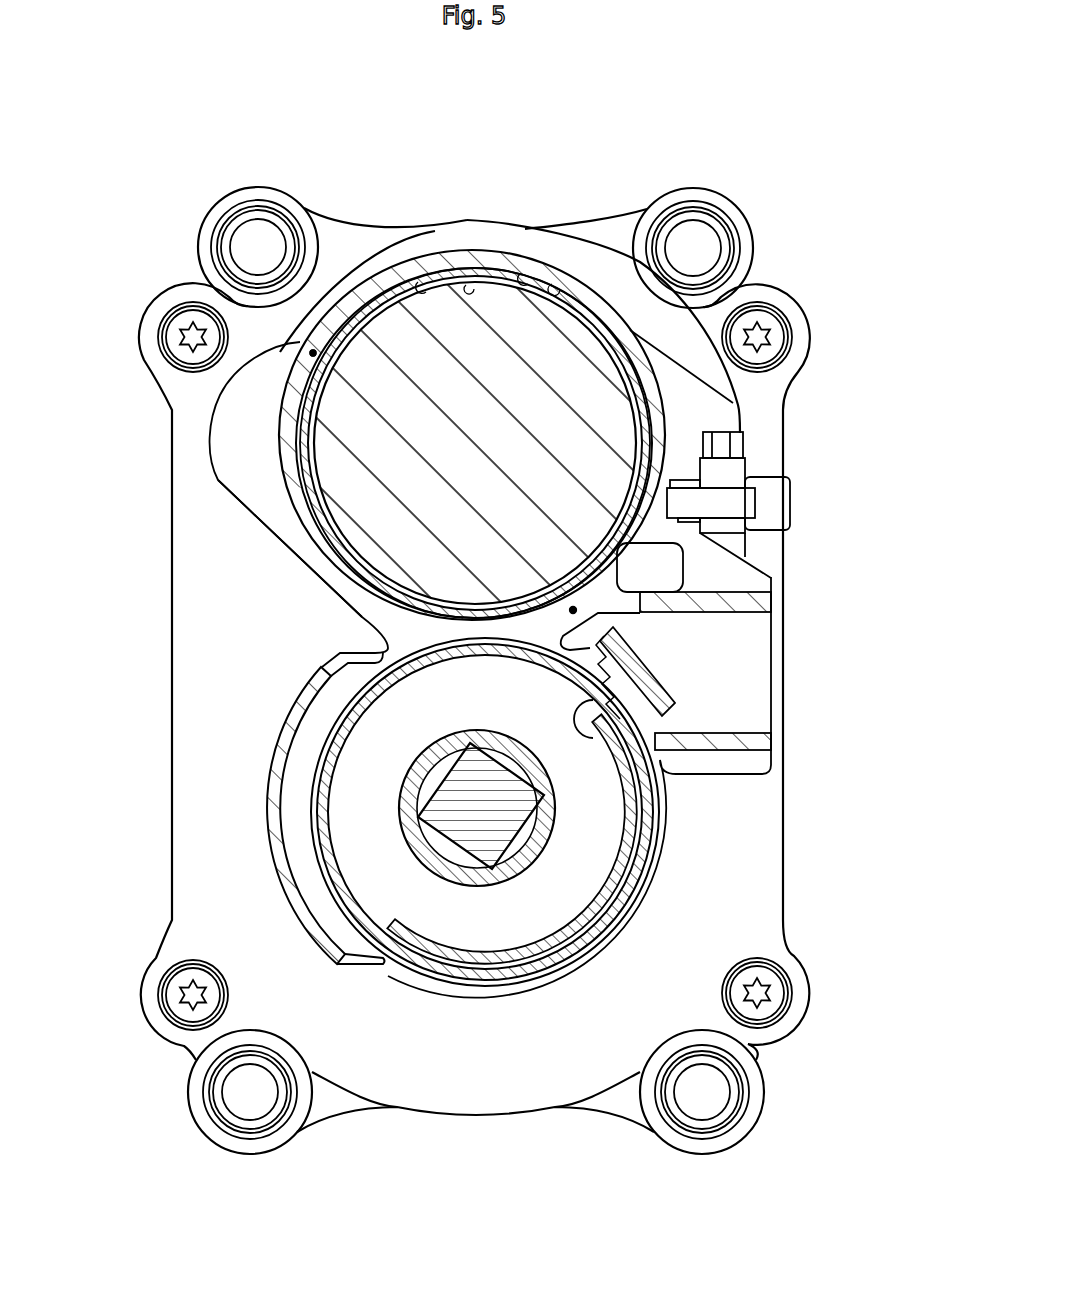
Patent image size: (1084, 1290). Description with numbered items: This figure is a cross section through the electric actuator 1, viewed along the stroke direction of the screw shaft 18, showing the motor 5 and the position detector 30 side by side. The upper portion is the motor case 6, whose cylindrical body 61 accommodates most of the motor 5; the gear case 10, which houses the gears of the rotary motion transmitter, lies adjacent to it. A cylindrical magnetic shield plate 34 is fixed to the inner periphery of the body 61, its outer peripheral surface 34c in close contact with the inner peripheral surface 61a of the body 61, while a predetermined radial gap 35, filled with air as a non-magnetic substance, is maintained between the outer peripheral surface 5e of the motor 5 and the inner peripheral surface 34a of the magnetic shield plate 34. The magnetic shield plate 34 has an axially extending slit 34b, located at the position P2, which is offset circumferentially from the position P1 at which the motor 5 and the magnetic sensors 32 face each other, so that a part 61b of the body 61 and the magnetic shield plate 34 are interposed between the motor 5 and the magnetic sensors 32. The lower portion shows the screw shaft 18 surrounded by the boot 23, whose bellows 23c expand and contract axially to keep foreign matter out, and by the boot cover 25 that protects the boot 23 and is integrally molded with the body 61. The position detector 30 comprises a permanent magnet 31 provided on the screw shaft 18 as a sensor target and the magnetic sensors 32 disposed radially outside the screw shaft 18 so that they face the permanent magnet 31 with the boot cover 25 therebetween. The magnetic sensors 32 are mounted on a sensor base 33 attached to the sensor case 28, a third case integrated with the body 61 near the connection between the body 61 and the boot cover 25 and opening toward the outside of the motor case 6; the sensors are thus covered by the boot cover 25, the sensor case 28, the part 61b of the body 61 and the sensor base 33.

The electric actuator 1 is at (616, 156).
The motor case 6 is at (426, 226).
The gear case 10 is at (728, 207).
The magnetic shield plate 34 is at (452, 258).
The inner peripheral surface 34a is at (421, 289).
The slit 34b is at (320, 364).
The outer peripheral surface 34c is at (524, 278).
The body 61 is at (486, 258).
The inner peripheral surface 61a is at (556, 286).
The part of the body 61b is at (580, 612).
The motor 5 is at (615, 418).
The outer peripheral surface 5e is at (470, 287).
The position P2 is at (312, 356).
The radial gap 35 is at (308, 480).
The position P1 is at (620, 583).
The sensor case 28 is at (727, 617).
The sensor base 33 is at (645, 676).
The position detector 30 is at (852, 705).
The magnetic sensors 32 is at (683, 729).
The permanent magnet 31 is at (532, 785).
The screw shaft 18 is at (457, 804).
The boot 23 is at (468, 962).
The bellows 23c is at (485, 812).
The boot cover 25 is at (657, 837).